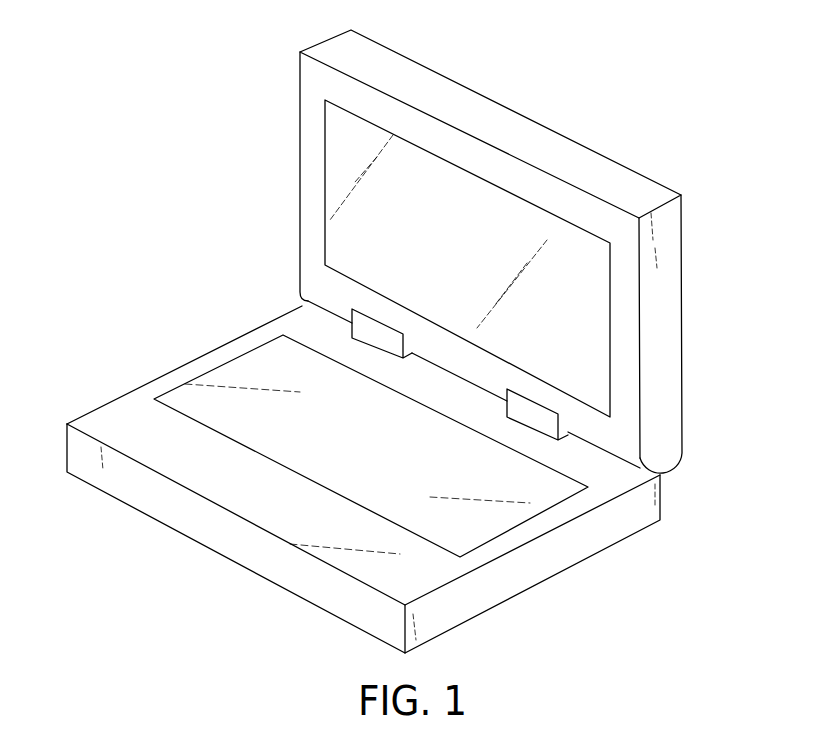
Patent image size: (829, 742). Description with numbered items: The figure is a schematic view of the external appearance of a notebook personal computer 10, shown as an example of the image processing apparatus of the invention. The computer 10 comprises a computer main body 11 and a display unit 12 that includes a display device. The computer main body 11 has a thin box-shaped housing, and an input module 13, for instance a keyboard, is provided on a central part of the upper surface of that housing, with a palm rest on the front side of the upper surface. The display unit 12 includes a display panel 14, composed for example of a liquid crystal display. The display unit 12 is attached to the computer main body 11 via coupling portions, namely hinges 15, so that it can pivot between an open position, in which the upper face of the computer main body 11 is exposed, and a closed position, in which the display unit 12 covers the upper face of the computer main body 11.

The notebook personal computer 10 is at (548, 76).
The computer main body 11 is at (192, 360).
The display unit 12 is at (292, 161).
The input module 13 is at (542, 495).
The display panel 14 is at (610, 317).
The coupling portions (hinges) 15 is at (357, 346).